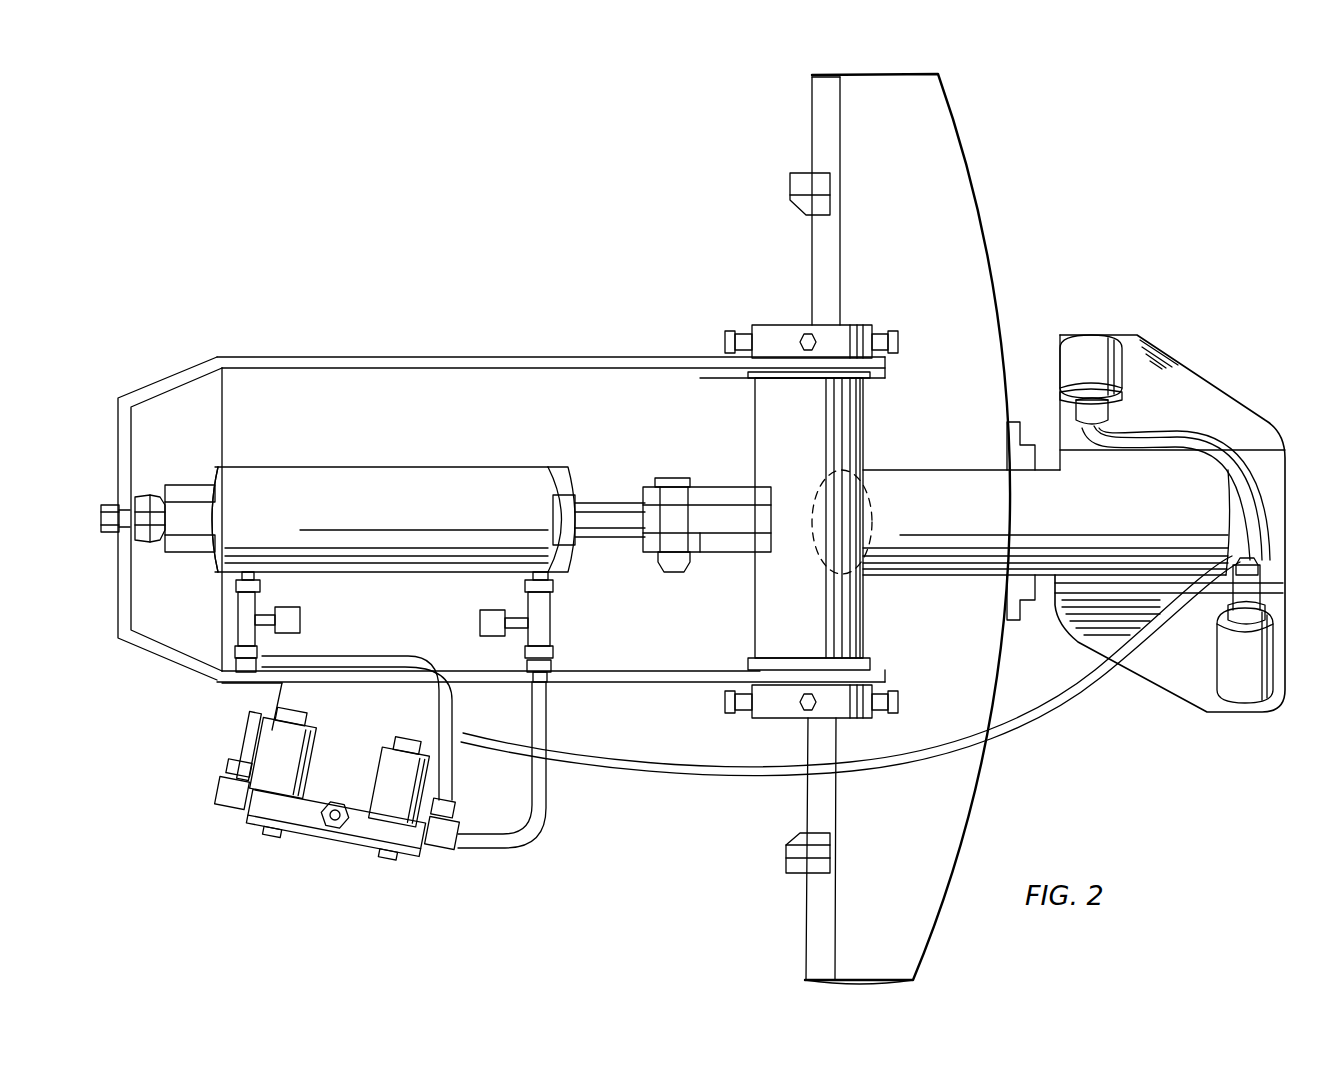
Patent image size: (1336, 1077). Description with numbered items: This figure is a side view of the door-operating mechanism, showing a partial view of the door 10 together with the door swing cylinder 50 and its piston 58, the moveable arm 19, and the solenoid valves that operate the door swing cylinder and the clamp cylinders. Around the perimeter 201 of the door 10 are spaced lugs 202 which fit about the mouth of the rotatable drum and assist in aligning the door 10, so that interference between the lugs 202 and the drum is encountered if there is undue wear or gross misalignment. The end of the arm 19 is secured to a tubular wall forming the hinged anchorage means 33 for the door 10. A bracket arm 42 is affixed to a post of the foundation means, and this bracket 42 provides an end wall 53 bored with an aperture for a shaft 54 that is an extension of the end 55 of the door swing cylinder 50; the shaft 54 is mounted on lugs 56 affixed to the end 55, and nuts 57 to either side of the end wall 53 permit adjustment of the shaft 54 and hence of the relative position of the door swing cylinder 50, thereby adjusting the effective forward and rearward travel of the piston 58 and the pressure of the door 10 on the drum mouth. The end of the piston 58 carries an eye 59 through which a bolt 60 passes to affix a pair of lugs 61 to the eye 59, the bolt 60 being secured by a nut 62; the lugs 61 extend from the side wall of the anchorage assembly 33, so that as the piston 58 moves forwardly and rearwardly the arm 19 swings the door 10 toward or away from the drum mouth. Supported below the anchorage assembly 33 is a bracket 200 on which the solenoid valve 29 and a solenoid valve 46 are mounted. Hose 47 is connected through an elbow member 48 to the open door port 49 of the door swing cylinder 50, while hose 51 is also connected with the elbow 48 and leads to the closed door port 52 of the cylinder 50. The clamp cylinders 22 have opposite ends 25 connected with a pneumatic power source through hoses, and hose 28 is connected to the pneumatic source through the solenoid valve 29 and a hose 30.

The door 10 is at (926, 198).
The arm 19 is at (930, 572).
The cylinders 22 is at (1085, 350).
The opposite ends of the cylinders 25 is at (1060, 400).
The hose 28 is at (240, 746).
The solenoid valve 29 is at (280, 782).
The hose 30 is at (332, 830).
The hinged anchorage means 33 is at (793, 314).
The bracket arm 42 is at (432, 357).
The solenoid valve 46 is at (392, 798).
The hose 47 is at (547, 779).
The elbow member 48 is at (456, 848).
The open door port 49 is at (553, 590).
The door swing cylinder 50 is at (490, 466).
The hose 51 is at (455, 775).
The closed door port 52 is at (258, 582).
The end wall 53 is at (172, 372).
The shaft 54 is at (100, 519).
The end of the door swing cylinder 55 is at (216, 467).
The lugs 56 is at (186, 492).
The nuts 57 is at (140, 540).
The piston 58 is at (612, 503).
The eye 59 is at (705, 545).
The bolt 60 is at (672, 478).
The lugs 61 is at (720, 538).
The nut 62 is at (652, 580).
The bracket 200 is at (282, 698).
The perimeter 201 is at (812, 110).
The lugs 202 is at (797, 184).